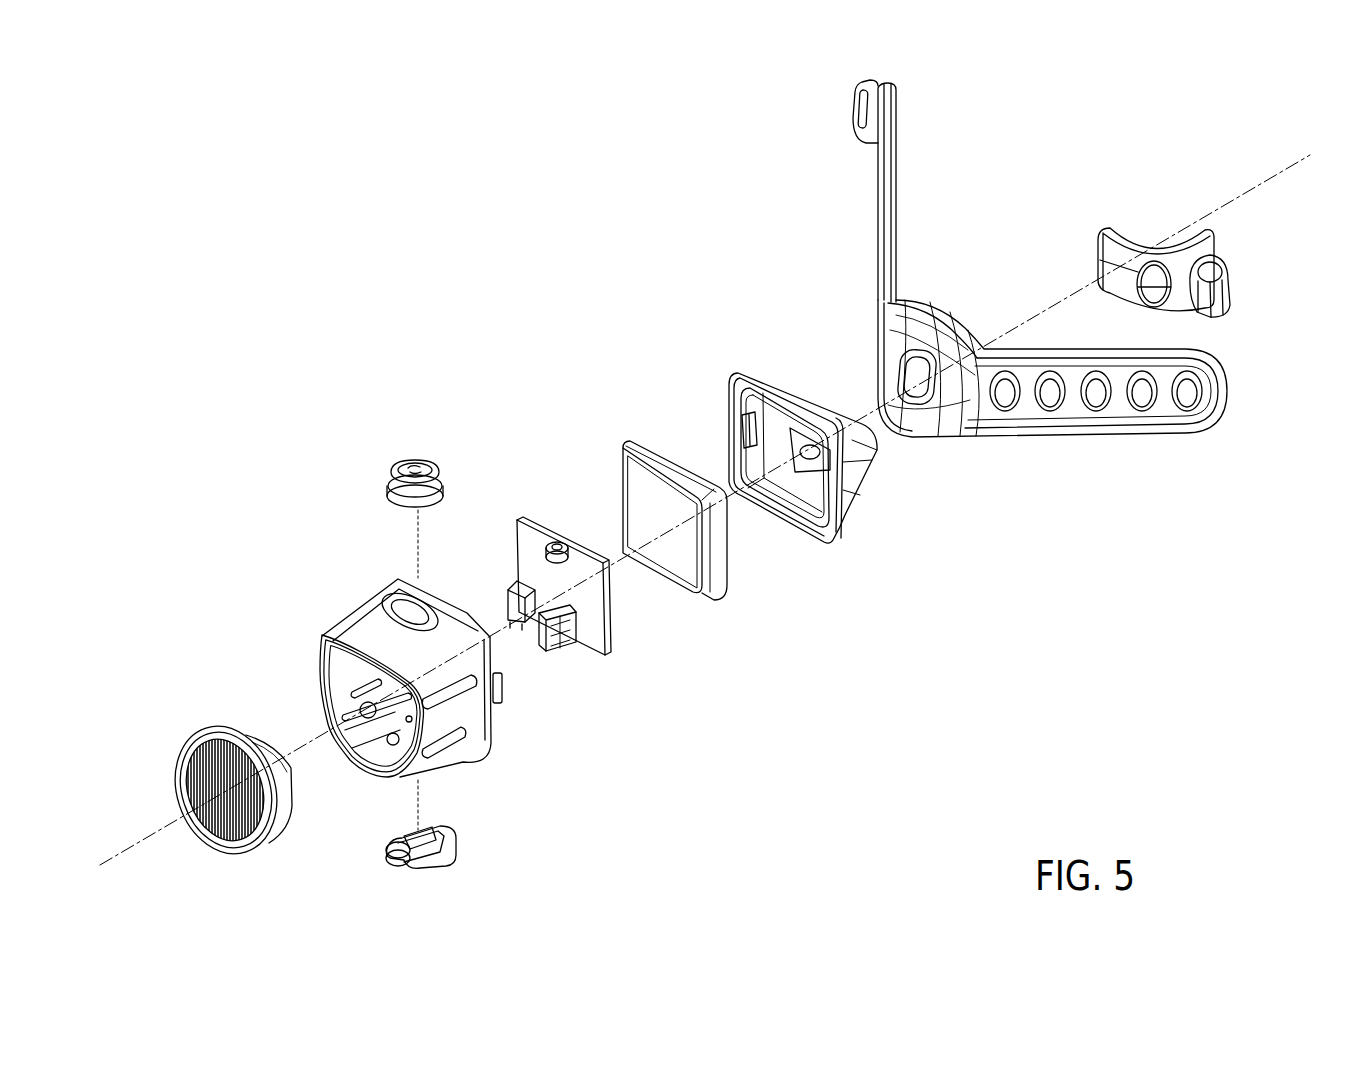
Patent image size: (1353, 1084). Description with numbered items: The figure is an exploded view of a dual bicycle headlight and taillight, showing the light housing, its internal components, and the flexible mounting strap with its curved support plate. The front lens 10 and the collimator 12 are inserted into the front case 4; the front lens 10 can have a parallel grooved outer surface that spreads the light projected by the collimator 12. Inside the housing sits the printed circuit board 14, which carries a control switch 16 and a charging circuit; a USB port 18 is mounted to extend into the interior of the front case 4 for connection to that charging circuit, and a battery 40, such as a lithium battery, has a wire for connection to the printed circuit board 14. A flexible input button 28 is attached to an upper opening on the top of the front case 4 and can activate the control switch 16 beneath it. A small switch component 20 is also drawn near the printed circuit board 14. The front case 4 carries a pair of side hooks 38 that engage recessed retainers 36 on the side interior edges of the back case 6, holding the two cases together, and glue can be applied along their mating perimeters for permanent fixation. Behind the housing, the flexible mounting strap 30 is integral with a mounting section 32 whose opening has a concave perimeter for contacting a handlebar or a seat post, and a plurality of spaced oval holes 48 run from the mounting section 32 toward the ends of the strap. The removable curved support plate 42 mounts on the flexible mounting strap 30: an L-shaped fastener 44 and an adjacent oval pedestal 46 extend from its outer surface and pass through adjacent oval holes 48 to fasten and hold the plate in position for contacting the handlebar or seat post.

The front case 4 is at (451, 758).
The back case 6 is at (751, 451).
The front lens 10 is at (265, 845).
The collimator 12 is at (248, 726).
The printed circuit board 14 is at (572, 643).
The control switch 16 is at (540, 545).
The USB port 18 is at (557, 652).
The switch 20 is at (492, 590).
The flexible input button 28 is at (396, 462).
The flexible mounting strap 30 is at (1040, 291).
The mounting section 32 is at (913, 404).
The recessed retainers 36 is at (744, 420).
The side hooks 38 is at (501, 698).
The battery 40 is at (720, 600).
The removable curved support plate 42 is at (1174, 263).
The L-shaped fastener 44 is at (1219, 311).
The oval pedestal 46 is at (1141, 257).
The oval holes 48 is at (1150, 405).